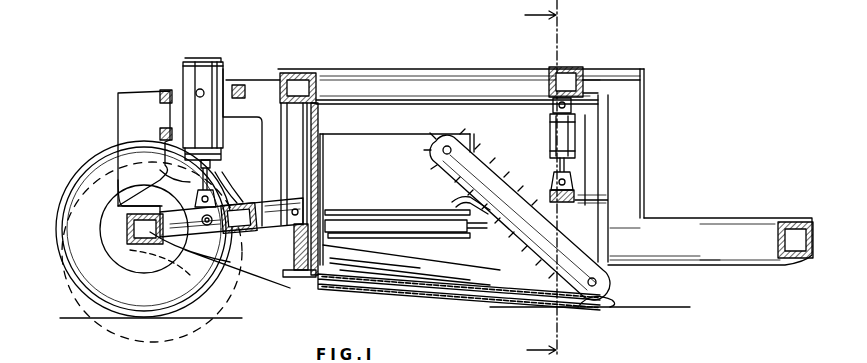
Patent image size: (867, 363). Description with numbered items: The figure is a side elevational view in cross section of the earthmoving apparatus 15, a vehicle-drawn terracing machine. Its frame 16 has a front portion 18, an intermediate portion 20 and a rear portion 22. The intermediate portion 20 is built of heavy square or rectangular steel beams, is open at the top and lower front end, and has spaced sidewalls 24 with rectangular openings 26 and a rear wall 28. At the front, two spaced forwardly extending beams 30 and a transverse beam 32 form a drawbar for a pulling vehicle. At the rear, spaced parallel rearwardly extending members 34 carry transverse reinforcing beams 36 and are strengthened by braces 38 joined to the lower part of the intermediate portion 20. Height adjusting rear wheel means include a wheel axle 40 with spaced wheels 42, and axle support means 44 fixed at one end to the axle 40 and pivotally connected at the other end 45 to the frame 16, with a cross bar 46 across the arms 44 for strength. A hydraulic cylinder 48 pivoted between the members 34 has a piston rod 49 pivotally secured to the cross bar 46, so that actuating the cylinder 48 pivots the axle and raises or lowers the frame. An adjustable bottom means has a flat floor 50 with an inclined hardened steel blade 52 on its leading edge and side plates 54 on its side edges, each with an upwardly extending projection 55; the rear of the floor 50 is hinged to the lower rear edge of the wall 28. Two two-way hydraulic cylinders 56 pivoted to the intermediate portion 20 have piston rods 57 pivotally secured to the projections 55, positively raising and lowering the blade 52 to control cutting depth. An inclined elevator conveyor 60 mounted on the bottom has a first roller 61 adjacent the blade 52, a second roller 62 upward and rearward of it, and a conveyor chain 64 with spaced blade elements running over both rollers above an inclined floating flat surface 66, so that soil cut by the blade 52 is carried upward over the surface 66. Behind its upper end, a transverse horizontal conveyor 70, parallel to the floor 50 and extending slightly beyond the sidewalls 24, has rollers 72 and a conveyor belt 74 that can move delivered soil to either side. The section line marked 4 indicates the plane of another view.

The section line 4- 4 is at (533, 180).
The earthmoving apparatus 15 is at (625, 66).
The frame 16 is at (576, 67).
The front portion 18 is at (686, 218).
The intermediate portion 20 is at (470, 70).
The rear portion 22 is at (232, 85).
The sidewalls 24 is at (518, 140).
The rectangular openings 26 is at (362, 143).
The rear wall 28 is at (319, 124).
The forwardly extending beams 30 is at (722, 250).
The transverse beam 32 is at (818, 228).
The rearwardly extending members 34 is at (150, 125).
The reinforcing beams 36 is at (163, 90).
The braces 38 is at (147, 201).
The wheel axle 40 is at (132, 232).
The wheels 42 is at (66, 190).
The axle support means 44 is at (228, 262).
The other end 45 is at (299, 190).
The cross bar 46 is at (233, 210).
The hydraulic cylinder 48 is at (190, 75).
The piston rod 49 is at (215, 180).
The floor 50 is at (450, 305).
The blade 52 is at (615, 307).
The side plates 54 is at (414, 265).
The upwardly extending projection 55 is at (574, 178).
The hydraulic cylinders 56 is at (549, 112).
The piston rods 57 is at (575, 156).
The elevator conveyor 60 is at (462, 130).
The first roller 61 is at (612, 286).
The second roller 62 is at (446, 137).
The conveyor chain 64 is at (535, 158).
The inclined floating flat surface 66 is at (522, 292).
The transverse conveyor 70 is at (400, 220).
The rollers 72 is at (352, 210).
The conveyor belt 74 is at (446, 210).